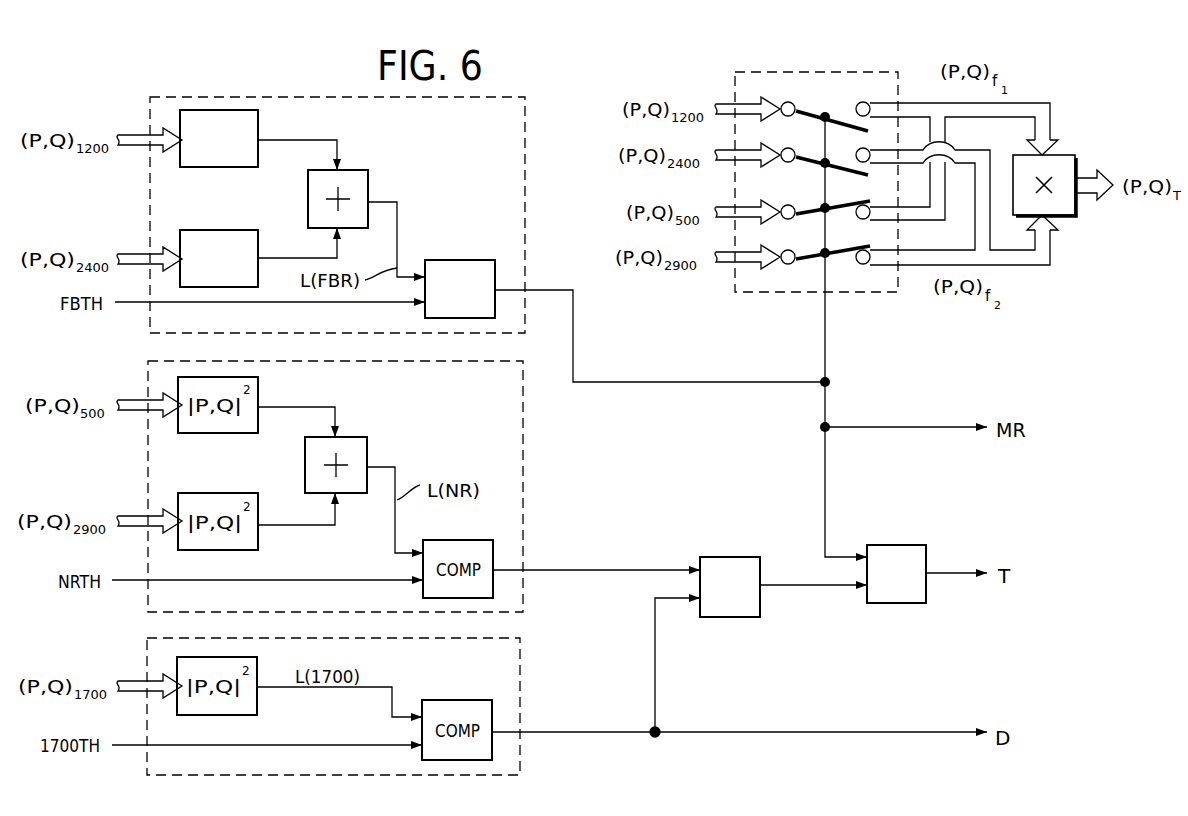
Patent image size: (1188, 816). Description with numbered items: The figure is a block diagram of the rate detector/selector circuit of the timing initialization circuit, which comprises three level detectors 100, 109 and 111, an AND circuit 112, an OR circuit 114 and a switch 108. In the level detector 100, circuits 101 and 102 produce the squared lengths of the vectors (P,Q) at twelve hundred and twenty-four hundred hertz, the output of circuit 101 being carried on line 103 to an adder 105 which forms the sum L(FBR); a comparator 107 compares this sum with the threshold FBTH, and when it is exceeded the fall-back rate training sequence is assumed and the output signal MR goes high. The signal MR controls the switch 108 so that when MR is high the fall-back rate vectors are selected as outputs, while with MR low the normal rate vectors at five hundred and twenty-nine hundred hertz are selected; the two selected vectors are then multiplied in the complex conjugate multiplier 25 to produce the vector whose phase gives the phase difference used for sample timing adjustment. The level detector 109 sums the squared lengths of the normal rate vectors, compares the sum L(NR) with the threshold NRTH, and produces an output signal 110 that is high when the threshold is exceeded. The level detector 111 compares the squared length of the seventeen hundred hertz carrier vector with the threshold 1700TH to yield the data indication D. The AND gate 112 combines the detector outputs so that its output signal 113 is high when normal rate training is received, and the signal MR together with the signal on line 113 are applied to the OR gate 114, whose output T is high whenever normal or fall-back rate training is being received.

The complex conjugate multiplier 25 is at (1060, 165).
The level detector 100 is at (525, 180).
The squared length circuit 101 is at (222, 167).
The squared length circuit 102 is at (223, 230).
The output line of circuit 101 103 is at (300, 140).
The adder 105 is at (358, 186).
The comparator 107 is at (458, 258).
The switch 108 is at (765, 292).
The level detector 109 is at (523, 475).
The output signal 110 is at (558, 570).
The level detector 111 is at (520, 673).
The AND circuit 112 is at (718, 560).
The output signal of AND gate 113 is at (810, 588).
The OR circuit 114 is at (890, 545).